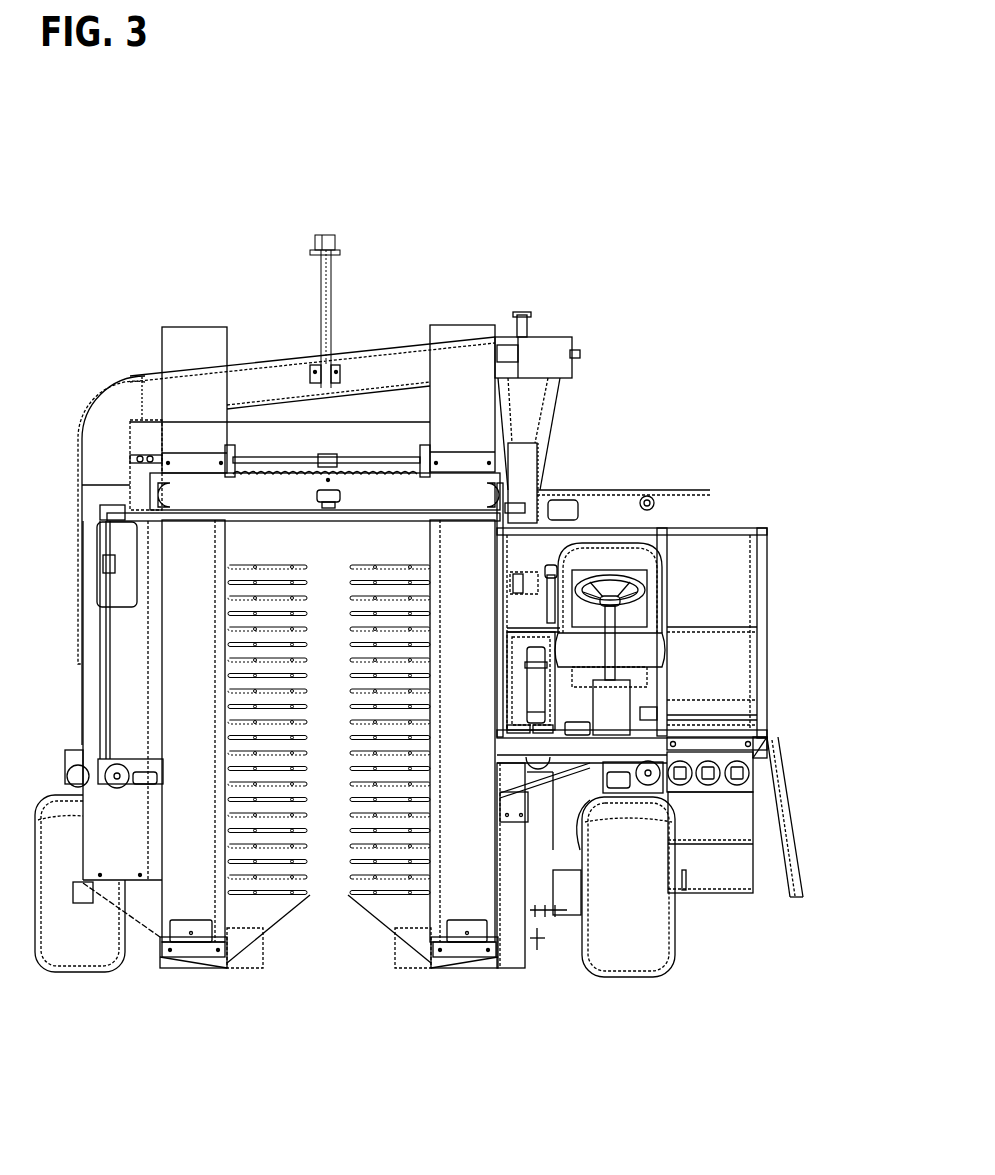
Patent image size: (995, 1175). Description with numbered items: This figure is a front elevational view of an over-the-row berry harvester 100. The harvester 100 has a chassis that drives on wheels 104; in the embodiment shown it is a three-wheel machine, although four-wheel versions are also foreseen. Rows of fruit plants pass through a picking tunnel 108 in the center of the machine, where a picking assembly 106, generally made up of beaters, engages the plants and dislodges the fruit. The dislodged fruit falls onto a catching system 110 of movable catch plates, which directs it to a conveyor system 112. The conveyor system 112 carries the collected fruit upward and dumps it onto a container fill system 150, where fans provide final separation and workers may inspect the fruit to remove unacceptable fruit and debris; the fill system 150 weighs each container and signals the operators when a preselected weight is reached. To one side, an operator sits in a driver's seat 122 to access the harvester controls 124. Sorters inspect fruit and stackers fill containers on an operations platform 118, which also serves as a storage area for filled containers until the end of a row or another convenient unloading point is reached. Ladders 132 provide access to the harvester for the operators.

The berry harvester 100 is at (638, 220).
The wheels 104 is at (76, 955).
The picking assembly 106 is at (271, 583).
The picking tunnel 108 is at (322, 992).
The catching system 110 is at (310, 897).
The conveyor system 112 is at (192, 345).
The operations platform 118 is at (707, 723).
The driver's seat 122 is at (608, 558).
The harvester controls 124 is at (552, 565).
The ladders 132 is at (721, 893).
The container fill system 150 is at (640, 418).